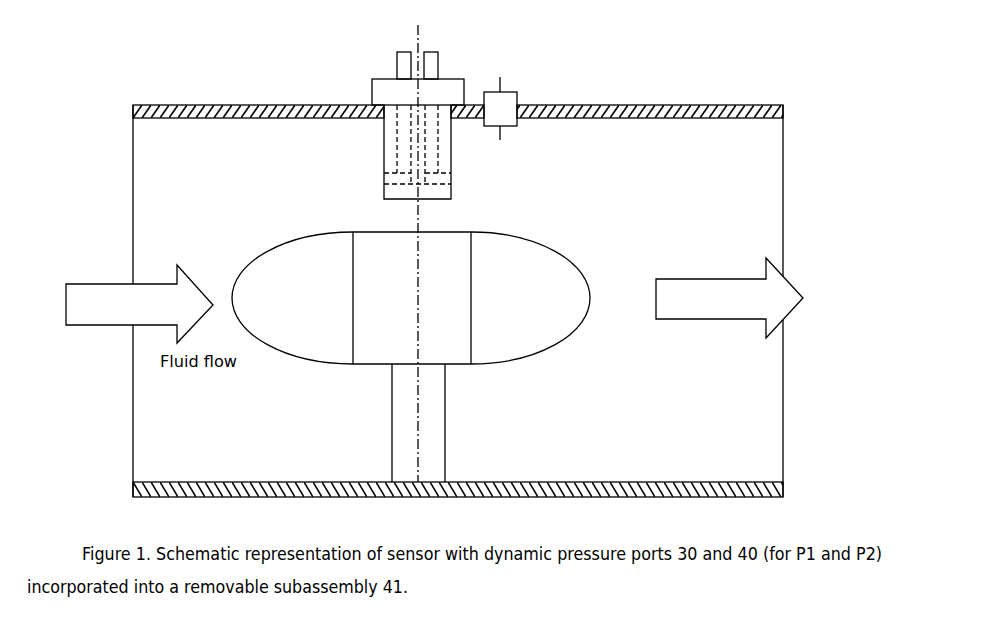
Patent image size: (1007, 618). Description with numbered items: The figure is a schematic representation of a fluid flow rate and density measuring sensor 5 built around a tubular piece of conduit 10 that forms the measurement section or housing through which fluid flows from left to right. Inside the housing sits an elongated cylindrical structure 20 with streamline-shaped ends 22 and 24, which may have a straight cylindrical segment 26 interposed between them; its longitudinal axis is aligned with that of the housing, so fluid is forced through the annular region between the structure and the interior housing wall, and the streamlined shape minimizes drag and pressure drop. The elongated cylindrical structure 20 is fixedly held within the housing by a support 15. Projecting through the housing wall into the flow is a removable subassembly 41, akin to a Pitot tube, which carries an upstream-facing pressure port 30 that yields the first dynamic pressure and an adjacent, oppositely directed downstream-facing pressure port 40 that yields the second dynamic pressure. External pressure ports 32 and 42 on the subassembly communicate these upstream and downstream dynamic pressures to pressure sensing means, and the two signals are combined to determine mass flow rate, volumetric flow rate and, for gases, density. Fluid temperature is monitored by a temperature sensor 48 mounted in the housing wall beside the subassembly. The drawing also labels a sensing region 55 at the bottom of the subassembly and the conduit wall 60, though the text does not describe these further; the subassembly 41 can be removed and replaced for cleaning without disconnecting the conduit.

The fluid flow rate and density measuring sensor 5 is at (238, 63).
The tubular piece of conduit 10 is at (613, 470).
The support 15 is at (452, 435).
The elongated cylindrical structure 20 is at (454, 303).
The streamline-shaped end 22 is at (318, 328).
The streamline-shaped end 24 is at (520, 273).
The straight cylindrical segment 26 is at (453, 230).
The upstream-facing pressure port 30 is at (375, 177).
The external pressure port 32 is at (397, 37).
The downstream-facing pressure port 40 is at (460, 180).
The subassembly 41 is at (466, 61).
The external pressure port 42 is at (437, 37).
The temperature sensor 48 is at (516, 81).
The pressure sensing element 55 is at (373, 192).
The conduit wall 60 is at (135, 415).